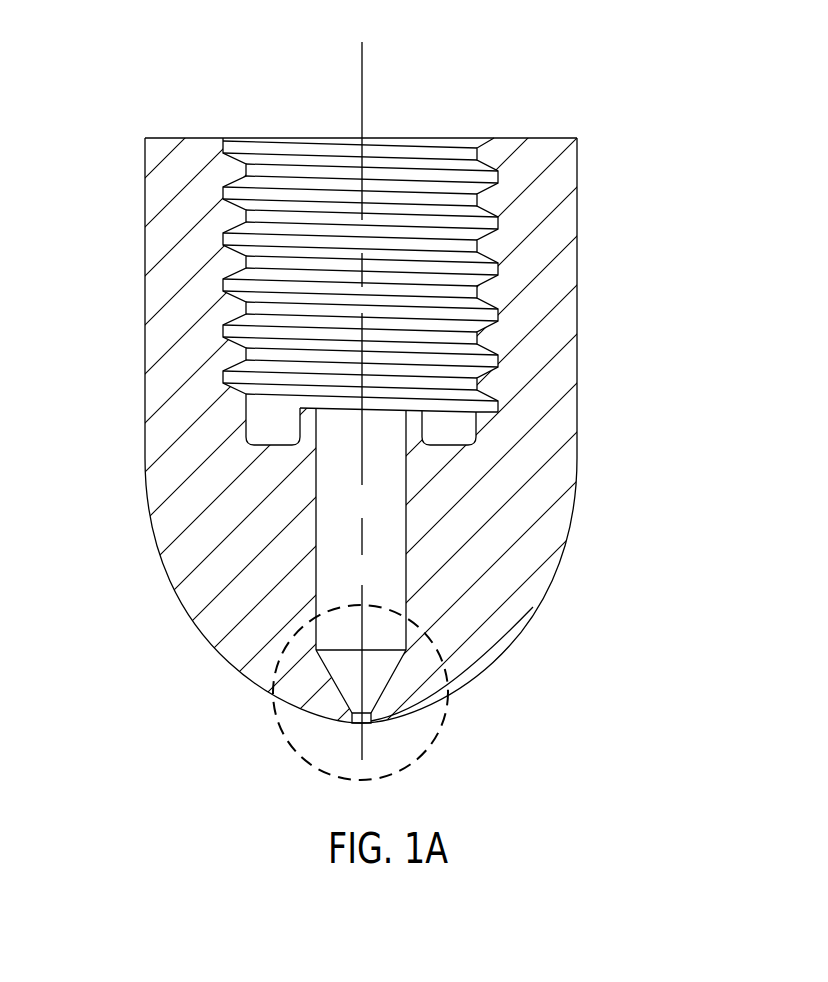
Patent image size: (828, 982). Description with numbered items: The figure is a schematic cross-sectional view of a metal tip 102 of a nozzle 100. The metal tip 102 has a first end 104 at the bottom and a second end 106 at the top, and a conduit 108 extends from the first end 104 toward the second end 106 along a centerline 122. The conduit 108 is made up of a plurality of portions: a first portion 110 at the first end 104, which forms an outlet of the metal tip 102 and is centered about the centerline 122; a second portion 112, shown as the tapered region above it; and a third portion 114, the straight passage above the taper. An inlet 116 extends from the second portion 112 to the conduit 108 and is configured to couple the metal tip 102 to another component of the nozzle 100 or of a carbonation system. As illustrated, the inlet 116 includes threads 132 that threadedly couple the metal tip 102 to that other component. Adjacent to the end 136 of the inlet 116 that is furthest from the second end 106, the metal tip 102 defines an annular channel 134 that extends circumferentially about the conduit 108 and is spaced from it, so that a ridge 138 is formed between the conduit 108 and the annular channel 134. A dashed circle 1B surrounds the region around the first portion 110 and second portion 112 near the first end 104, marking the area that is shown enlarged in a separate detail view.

The nozzle 100 is at (537, 82).
The metal tip 102 is at (578, 237).
The first end 104 is at (317, 712).
The second end 106 is at (190, 138).
The conduit 108 is at (375, 522).
The first portion 110 is at (375, 722).
The second portion 112 is at (398, 668).
The third portion 114 is at (408, 602).
The inlet 116 is at (405, 227).
The centerline 122 is at (362, 93).
The threads 132 is at (248, 262).
The annular channel 134 is at (247, 426).
The end of the inlet 136 is at (478, 422).
The ridge 138 is at (308, 405).
The dashed circle 1B is at (443, 722).